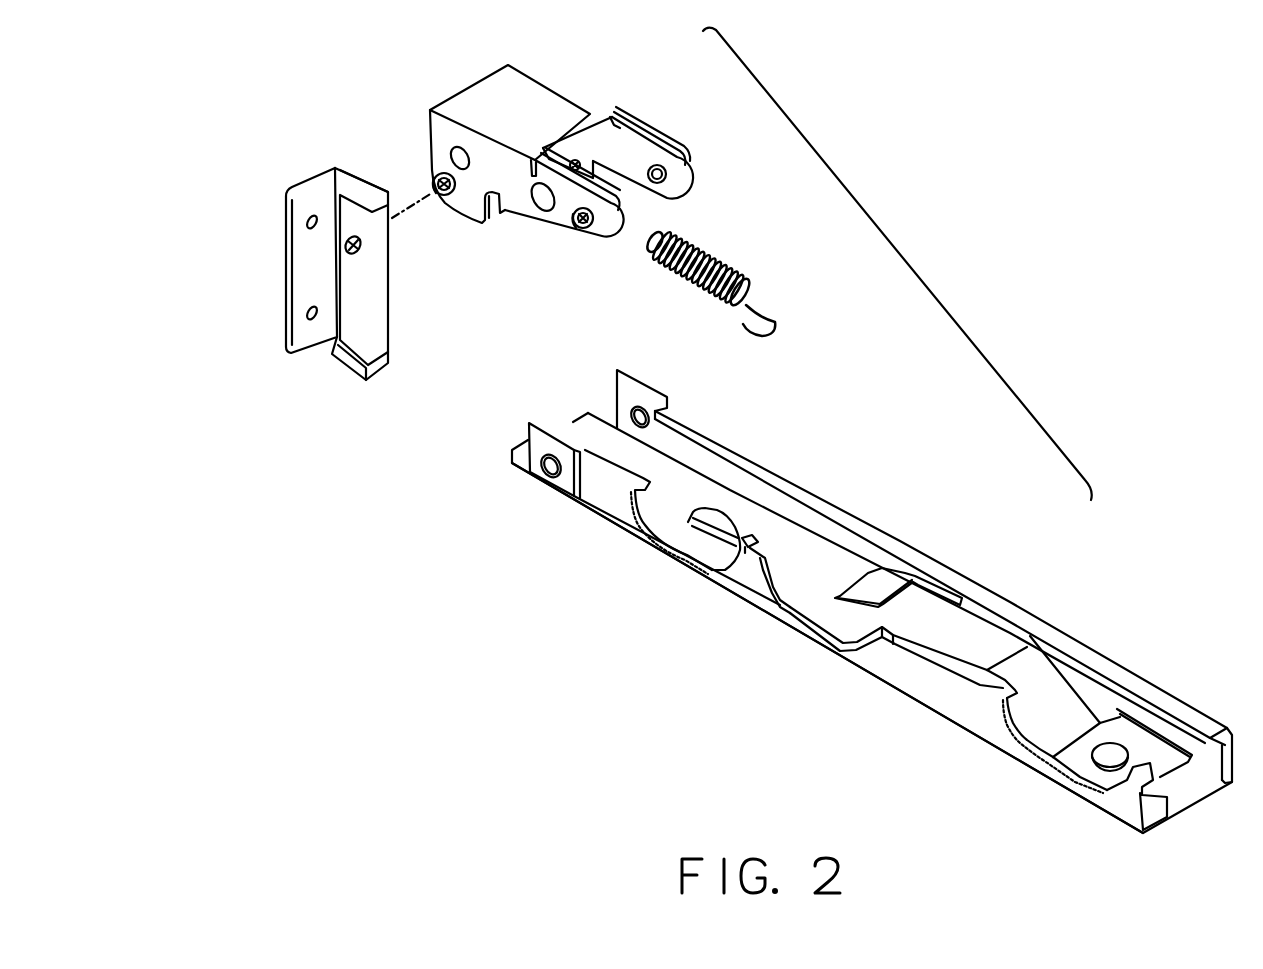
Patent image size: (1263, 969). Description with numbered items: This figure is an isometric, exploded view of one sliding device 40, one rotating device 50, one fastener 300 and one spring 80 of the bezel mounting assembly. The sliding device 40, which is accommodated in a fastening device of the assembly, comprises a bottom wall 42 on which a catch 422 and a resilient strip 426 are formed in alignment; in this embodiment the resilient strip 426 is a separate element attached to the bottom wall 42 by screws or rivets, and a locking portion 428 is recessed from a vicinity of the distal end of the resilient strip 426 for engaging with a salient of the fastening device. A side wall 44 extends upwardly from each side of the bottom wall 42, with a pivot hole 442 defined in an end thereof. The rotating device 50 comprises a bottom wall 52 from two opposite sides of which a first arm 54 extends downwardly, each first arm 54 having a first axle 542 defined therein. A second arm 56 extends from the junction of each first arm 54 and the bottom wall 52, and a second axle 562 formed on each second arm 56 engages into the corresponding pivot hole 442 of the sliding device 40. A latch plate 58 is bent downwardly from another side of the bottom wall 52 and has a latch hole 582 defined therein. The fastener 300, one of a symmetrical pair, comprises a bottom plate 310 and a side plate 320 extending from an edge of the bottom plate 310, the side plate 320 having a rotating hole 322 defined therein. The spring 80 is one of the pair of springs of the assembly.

The sliding device 40 is at (1005, 600).
The bottom wall 42 is at (883, 592).
The side wall 44 is at (922, 673).
The rotating device 50 is at (560, 75).
The bottom wall 52 is at (483, 86).
The first arm 54 is at (444, 126).
The second arm 56 is at (553, 194).
The latch plate 58 is at (570, 143).
The spring 80 is at (705, 262).
The fastener 300 is at (328, 374).
The bottom plate 310 is at (297, 250).
The side plate 320 is at (372, 333).
The rotating hole 322 is at (356, 248).
The catch 422 is at (727, 520).
The resilient strip 426 is at (1030, 675).
The locking portion 428 is at (937, 593).
The pivot hole 442 is at (547, 477).
The first axle 542 is at (441, 181).
The second axle 562 is at (585, 219).
The latch hole 582 is at (603, 128).